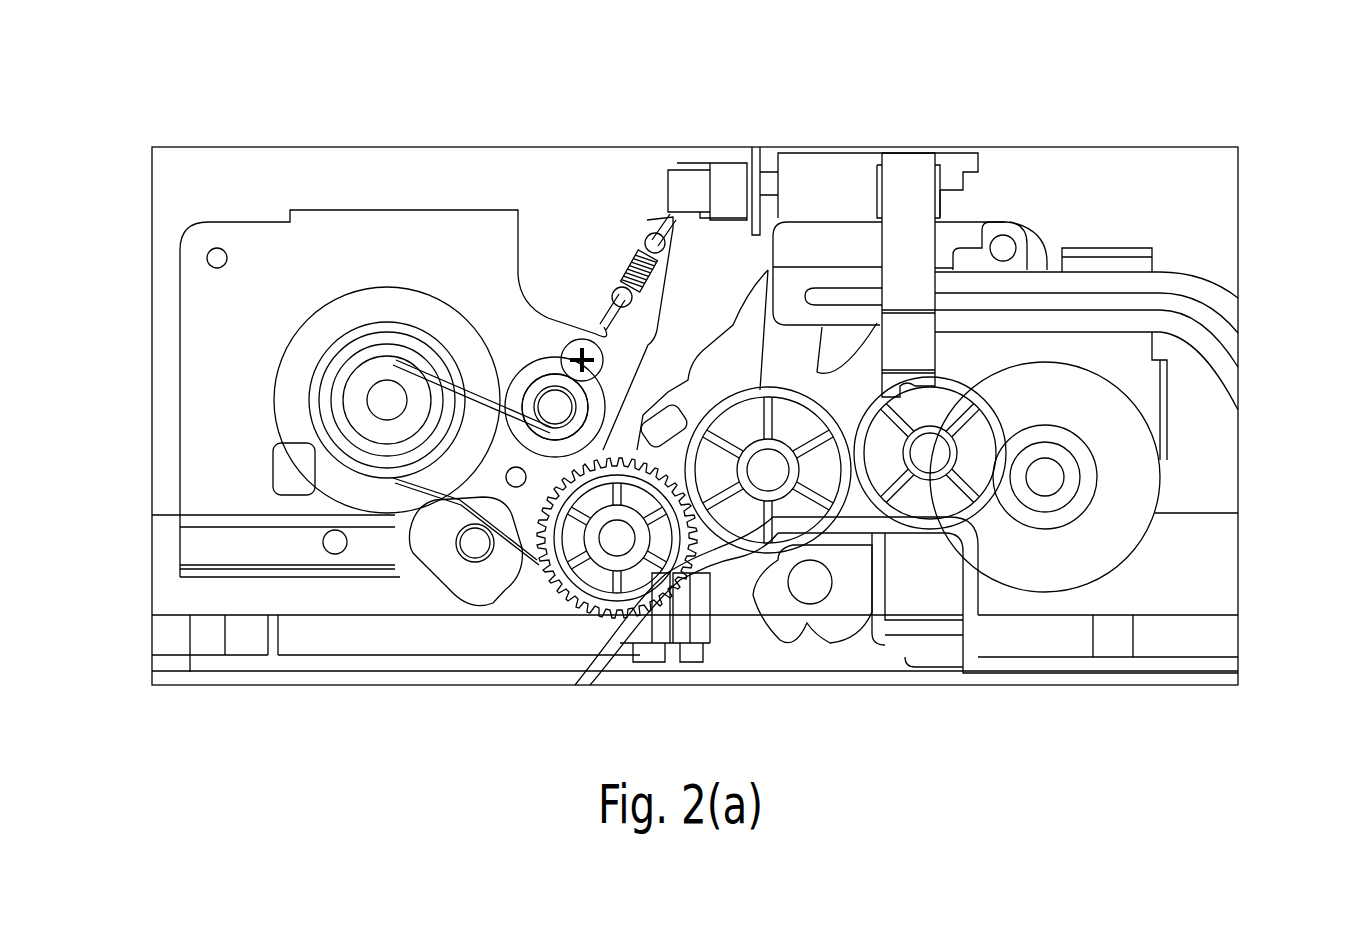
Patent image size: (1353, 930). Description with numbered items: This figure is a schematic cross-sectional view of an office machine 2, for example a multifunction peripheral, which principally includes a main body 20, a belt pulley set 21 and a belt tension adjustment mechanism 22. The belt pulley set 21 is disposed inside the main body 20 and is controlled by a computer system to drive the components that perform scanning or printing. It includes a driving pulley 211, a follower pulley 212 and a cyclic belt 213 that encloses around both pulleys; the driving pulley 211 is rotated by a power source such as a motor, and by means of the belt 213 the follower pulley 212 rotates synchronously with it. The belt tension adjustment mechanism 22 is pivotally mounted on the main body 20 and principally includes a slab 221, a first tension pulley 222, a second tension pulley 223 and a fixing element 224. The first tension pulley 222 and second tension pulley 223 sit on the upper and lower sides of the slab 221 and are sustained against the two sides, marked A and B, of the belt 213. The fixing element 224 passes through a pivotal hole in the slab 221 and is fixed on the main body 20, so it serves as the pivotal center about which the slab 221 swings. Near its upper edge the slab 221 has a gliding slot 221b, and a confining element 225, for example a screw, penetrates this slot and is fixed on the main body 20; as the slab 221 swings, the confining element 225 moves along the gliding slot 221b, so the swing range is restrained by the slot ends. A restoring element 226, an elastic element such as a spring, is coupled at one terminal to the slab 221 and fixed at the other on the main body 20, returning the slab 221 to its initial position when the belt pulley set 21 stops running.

The office machine 2 is at (1346, 67).
The main body 20 is at (1085, 172).
The belt pulley set 21 is at (388, 486).
The driving pulley 211 is at (298, 387).
The follower pulley 212 is at (552, 622).
The belt 213 is at (422, 487).
The belt tension adjustment mechanism 22 is at (554, 433).
The slab 221 is at (431, 622).
The gliding slot 221b is at (527, 382).
The first tension pulley 222 is at (558, 347).
The second tension pulley 223 is at (468, 575).
The fixing element 224 is at (516, 488).
The confining element 225 is at (580, 345).
The restoring element 226 is at (645, 230).